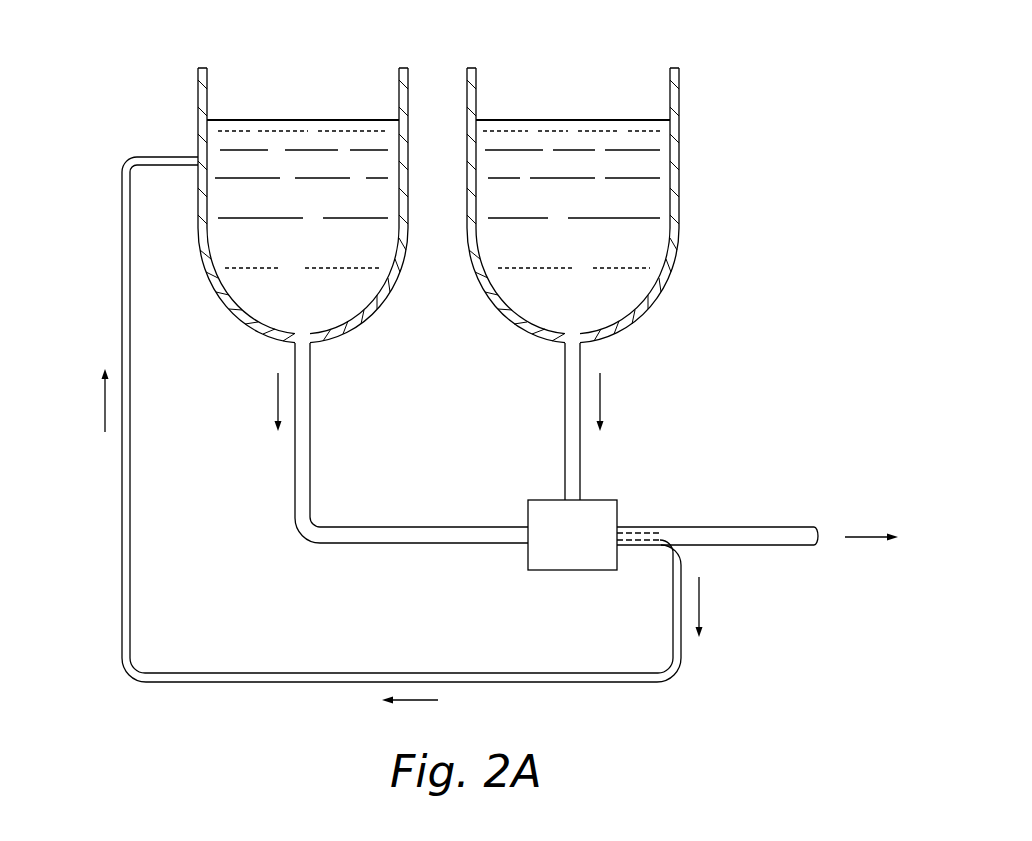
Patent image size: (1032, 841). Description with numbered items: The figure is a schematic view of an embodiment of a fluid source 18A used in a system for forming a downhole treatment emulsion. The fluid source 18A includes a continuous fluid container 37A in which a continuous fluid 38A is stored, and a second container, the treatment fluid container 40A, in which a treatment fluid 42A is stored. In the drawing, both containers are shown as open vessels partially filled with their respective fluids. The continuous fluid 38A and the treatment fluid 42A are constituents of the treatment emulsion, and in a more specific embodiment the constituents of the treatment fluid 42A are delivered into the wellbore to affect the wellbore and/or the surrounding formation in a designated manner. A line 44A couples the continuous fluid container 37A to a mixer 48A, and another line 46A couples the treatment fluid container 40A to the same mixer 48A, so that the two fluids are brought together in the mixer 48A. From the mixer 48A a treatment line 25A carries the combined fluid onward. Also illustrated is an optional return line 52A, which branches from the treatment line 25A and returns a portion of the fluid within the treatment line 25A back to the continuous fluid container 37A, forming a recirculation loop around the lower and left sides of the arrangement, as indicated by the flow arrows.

The fluid source 18A is at (133, 40).
The continuous fluid container 37A is at (197, 93).
The continuous fluid 38A is at (301, 120).
The treatment fluid container 40A is at (681, 92).
The treatment fluid 42A is at (568, 120).
The line 44A is at (295, 465).
The line 46A is at (581, 463).
The mixer 48A is at (573, 571).
The treatment line 25A is at (771, 527).
The return line 52A is at (122, 535).